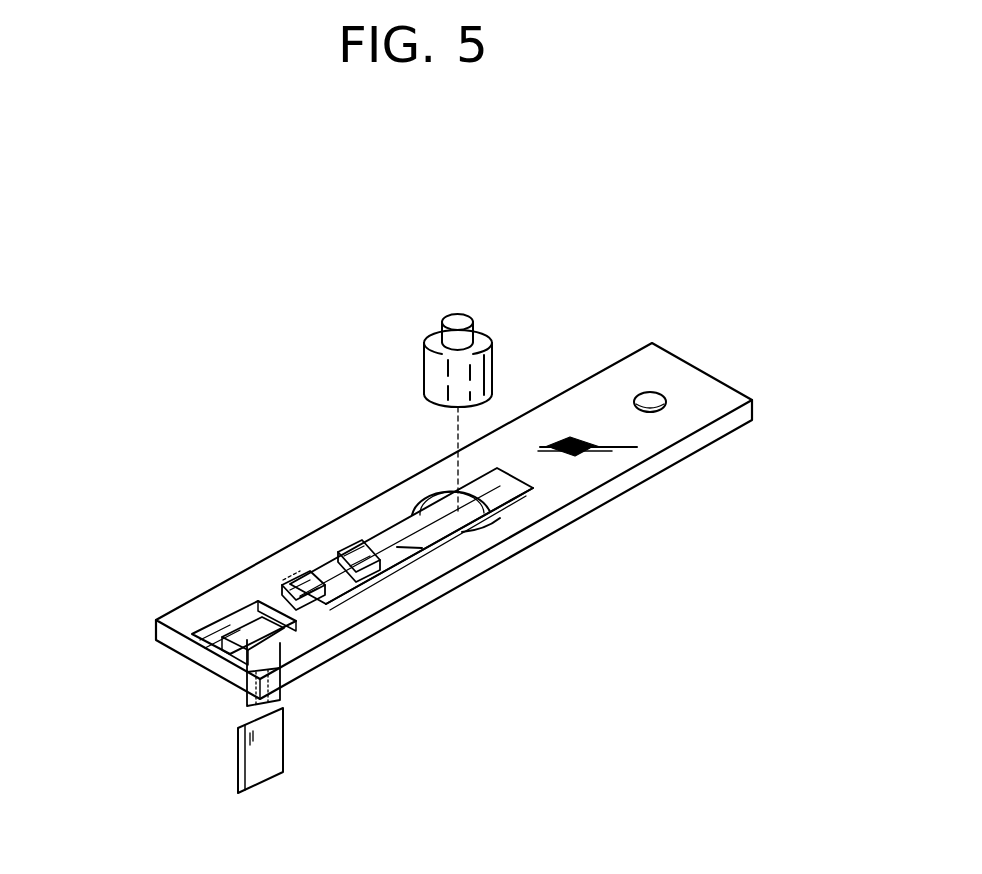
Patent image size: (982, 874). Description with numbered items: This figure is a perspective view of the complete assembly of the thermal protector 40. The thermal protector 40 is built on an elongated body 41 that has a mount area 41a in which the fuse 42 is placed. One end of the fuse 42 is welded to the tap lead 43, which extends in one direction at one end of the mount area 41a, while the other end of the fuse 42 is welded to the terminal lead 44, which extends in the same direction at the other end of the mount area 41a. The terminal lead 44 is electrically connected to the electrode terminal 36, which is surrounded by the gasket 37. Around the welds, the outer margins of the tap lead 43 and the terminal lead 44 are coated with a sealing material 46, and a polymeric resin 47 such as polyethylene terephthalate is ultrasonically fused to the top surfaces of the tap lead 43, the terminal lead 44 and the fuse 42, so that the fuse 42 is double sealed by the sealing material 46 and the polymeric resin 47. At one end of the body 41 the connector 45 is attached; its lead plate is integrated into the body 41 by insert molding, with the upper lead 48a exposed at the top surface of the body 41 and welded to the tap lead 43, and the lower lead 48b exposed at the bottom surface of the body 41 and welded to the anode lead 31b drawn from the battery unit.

The thermal protector 40 is at (713, 257).
The body 41 is at (724, 380).
The mount area 41a is at (497, 523).
The fuse 42 is at (352, 592).
The tap lead 43 is at (190, 648).
The terminal lead 44 is at (397, 547).
The connector 45 is at (118, 712).
The sealing material 46 is at (320, 602).
The polymeric resin 47 is at (330, 560).
The upper lead 48a is at (240, 624).
The lower lead 48b is at (242, 706).
The electrode terminal 36 is at (462, 318).
The gasket 37 is at (486, 366).
The anode lead 31b is at (276, 746).